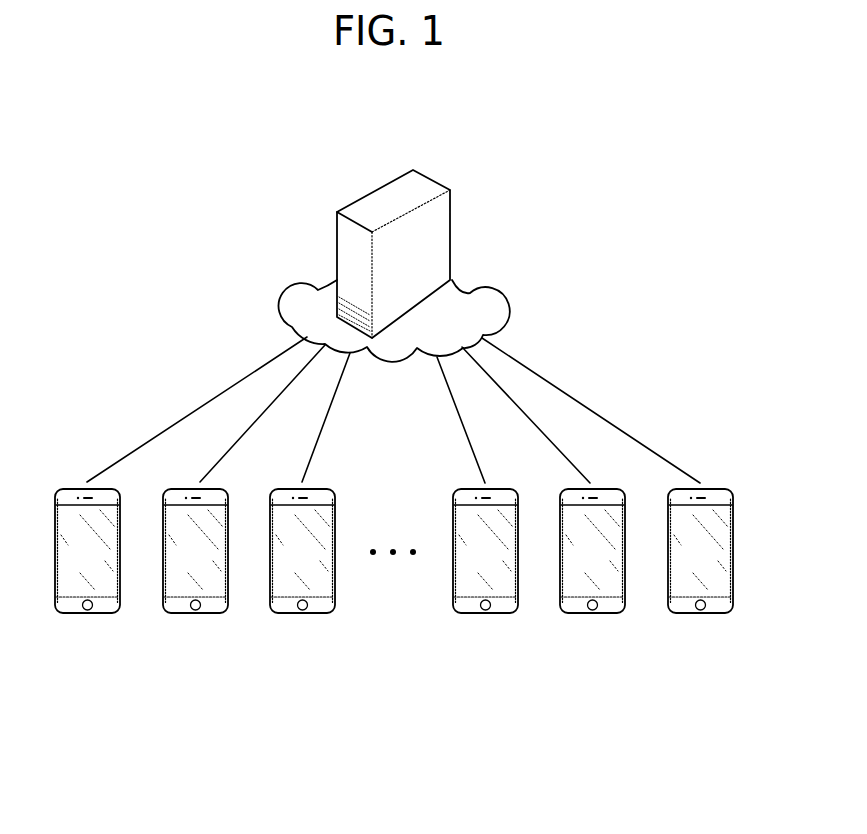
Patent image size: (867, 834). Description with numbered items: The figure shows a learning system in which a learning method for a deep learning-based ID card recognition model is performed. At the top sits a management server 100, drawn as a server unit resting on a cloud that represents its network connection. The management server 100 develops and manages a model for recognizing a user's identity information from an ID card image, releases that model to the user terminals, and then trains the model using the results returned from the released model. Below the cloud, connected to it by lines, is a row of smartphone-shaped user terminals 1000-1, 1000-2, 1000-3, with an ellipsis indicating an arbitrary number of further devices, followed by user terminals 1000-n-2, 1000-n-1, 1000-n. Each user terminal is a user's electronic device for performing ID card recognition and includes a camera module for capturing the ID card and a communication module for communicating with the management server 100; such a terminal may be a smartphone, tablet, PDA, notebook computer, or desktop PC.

The management server 100 is at (385, 195).
The user terminal 1000-1 is at (88, 613).
The user terminal 1000-2 is at (196, 613).
The user terminal 1000-3 is at (302, 613).
The user terminal 1000-n-2 is at (486, 613).
The user terminal 1000-n-1 is at (592, 613).
The user terminal 1000-n is at (700, 613).